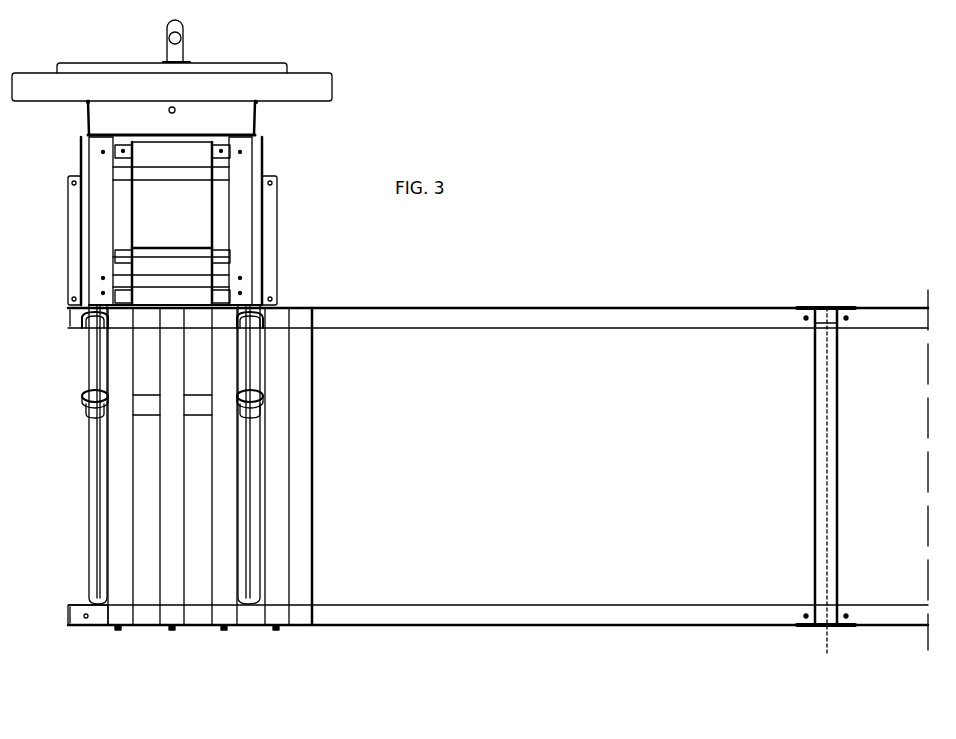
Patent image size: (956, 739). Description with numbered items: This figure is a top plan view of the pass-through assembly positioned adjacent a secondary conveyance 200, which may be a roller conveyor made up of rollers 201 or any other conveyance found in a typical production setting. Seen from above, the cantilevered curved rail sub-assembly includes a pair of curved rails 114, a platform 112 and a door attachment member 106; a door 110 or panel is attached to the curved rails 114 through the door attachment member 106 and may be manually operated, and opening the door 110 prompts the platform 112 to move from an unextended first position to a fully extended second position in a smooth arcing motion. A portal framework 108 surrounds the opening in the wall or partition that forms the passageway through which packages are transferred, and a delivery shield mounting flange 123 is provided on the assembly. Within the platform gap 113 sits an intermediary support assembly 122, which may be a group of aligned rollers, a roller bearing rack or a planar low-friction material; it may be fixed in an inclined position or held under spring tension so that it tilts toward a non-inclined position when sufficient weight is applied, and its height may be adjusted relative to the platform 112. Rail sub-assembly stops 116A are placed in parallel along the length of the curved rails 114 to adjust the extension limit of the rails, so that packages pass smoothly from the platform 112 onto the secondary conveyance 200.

The door attachment member 106 is at (107, 112).
The portal framework 108 is at (292, 99).
The door 110 is at (200, 62).
The platform 112 is at (240, 217).
The gap 113 is at (180, 210).
The curved rail 114 is at (92, 446).
The rail sub-assembly stop 116A is at (84, 399).
The intermediary support assembly 122 is at (195, 153).
The delivery shield mounting flange 123 is at (77, 226).
The secondary conveyance 200 is at (532, 330).
The roller 201 is at (115, 602).